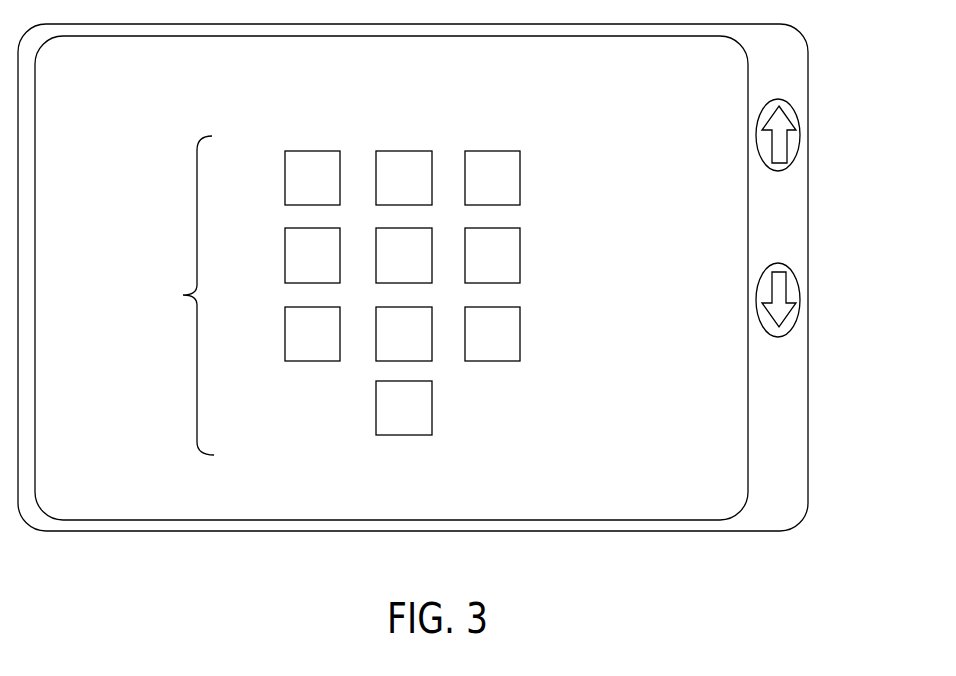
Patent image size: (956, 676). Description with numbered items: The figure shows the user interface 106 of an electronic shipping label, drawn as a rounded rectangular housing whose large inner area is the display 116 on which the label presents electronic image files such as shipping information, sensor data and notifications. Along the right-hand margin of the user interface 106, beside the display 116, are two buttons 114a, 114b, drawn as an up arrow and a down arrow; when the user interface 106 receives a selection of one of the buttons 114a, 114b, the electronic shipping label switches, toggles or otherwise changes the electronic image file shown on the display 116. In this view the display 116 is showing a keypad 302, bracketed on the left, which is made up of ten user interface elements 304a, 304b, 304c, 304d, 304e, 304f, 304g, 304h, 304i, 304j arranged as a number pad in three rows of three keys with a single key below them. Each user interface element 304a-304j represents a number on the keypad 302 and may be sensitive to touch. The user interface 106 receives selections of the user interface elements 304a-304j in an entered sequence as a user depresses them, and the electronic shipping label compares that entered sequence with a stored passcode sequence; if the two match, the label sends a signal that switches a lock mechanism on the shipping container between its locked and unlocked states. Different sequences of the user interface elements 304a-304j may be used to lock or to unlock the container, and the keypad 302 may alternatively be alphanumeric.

The user interface 106 is at (80, 532).
The display 116 is at (153, 510).
The button 114a is at (800, 128).
The button 114b is at (800, 292).
The keypad 302 is at (373, 269).
The user interface element 304a is at (322, 151).
The user interface element 304b is at (410, 151).
The user interface element 304c is at (500, 151).
The user interface element 304d is at (285, 247).
The user interface element 304e is at (419, 283).
The user interface element 304f is at (520, 253).
The user interface element 304g is at (285, 330).
The user interface element 304h is at (383, 362).
The user interface element 304i is at (520, 333).
The user interface element 304j is at (432, 417).